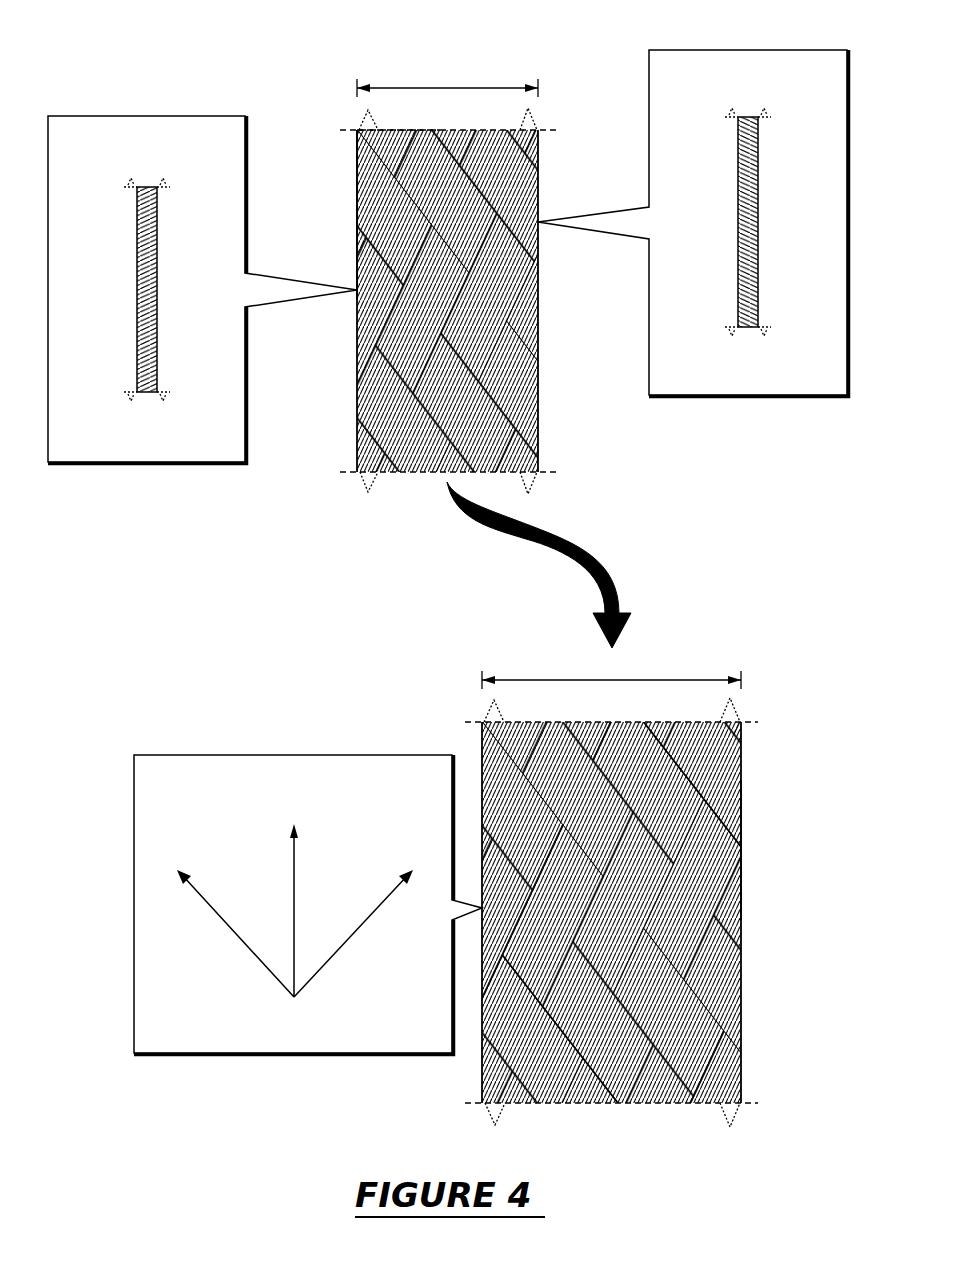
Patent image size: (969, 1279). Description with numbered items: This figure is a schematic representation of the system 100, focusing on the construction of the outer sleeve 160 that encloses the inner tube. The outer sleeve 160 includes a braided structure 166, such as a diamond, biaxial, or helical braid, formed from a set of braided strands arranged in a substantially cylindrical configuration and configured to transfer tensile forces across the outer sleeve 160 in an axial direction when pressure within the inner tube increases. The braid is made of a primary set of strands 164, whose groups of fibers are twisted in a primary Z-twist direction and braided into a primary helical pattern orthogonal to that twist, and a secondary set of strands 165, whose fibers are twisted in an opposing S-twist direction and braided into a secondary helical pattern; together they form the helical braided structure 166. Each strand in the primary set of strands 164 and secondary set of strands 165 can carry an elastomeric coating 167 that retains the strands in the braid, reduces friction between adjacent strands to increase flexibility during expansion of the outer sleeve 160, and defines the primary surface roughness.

The braided rope assembly 100 is at (134, 57).
The outer sleeve 160 is at (357, 430).
The primary set of strands 164 is at (137, 325).
The secondary set of strands 165 is at (738, 255).
The braided structure 166 is at (357, 172).
The elastomeric coating 167 is at (690, 848).